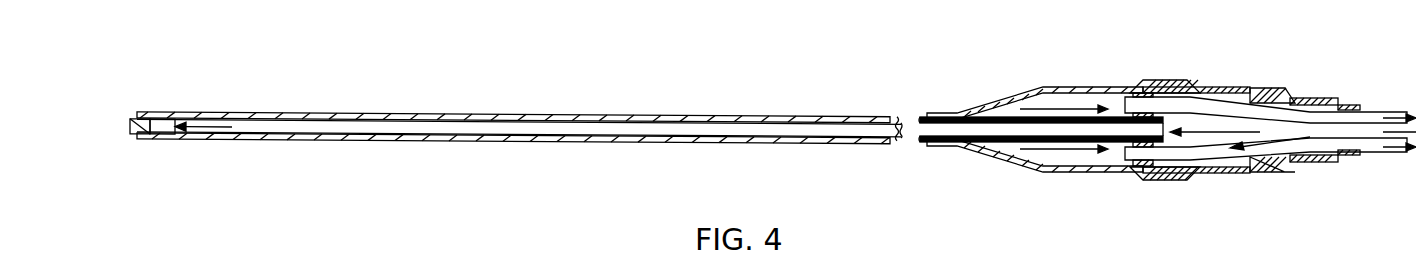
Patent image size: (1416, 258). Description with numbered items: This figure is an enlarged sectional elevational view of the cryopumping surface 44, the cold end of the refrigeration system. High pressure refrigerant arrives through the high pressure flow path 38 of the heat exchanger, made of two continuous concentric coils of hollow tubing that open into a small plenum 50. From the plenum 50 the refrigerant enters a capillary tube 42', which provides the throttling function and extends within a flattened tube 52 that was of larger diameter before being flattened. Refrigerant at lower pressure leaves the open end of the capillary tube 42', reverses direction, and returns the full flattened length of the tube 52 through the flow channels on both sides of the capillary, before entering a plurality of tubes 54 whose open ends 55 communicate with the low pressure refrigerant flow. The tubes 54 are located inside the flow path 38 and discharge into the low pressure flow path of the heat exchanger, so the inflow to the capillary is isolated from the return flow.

The high pressure flow path 38 is at (1347, 162).
The capillary tube 42' is at (650, 164).
The cryopumping surface 44 is at (316, 168).
The plenum 50 is at (1247, 98).
The flattened tube 52 is at (630, 115).
The tubes 54 is at (1213, 108).
The open ends 55 is at (1138, 92).